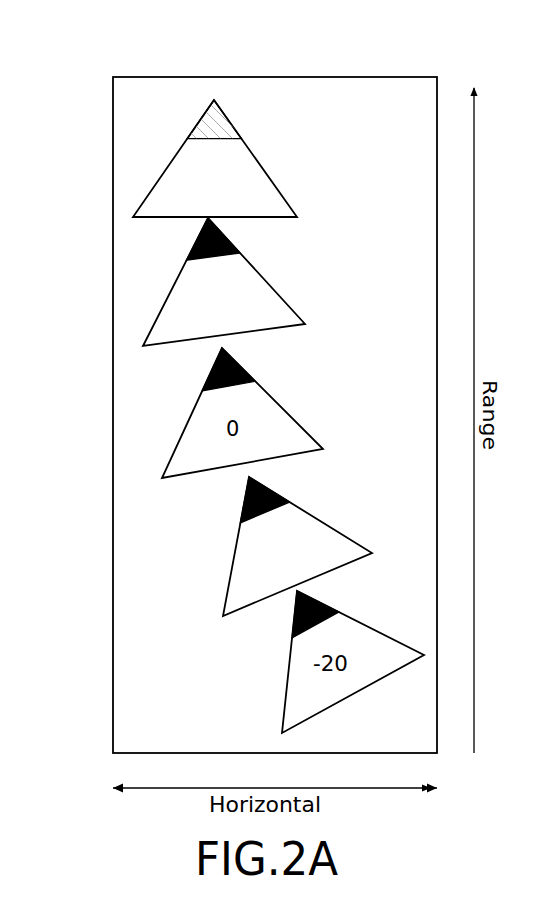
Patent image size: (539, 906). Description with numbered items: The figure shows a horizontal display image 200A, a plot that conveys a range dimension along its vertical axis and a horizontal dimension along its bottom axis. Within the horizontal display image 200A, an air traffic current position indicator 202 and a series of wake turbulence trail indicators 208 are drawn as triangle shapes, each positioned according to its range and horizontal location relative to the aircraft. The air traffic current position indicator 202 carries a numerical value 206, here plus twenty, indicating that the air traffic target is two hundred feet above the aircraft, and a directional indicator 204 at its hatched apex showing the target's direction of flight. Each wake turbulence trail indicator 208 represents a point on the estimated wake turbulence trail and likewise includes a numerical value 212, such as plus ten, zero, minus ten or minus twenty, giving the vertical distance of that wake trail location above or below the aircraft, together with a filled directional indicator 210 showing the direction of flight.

The horizontal display image 200A is at (192, 77).
The air traffic current position indicator 202 is at (153, 185).
The directional indicator 204 is at (202, 118).
The numerical value 206 is at (196, 166).
The wake turbulence trail indicator 208 is at (153, 323).
The directional indicator 210 is at (193, 242).
The numerical value 212 is at (196, 289).